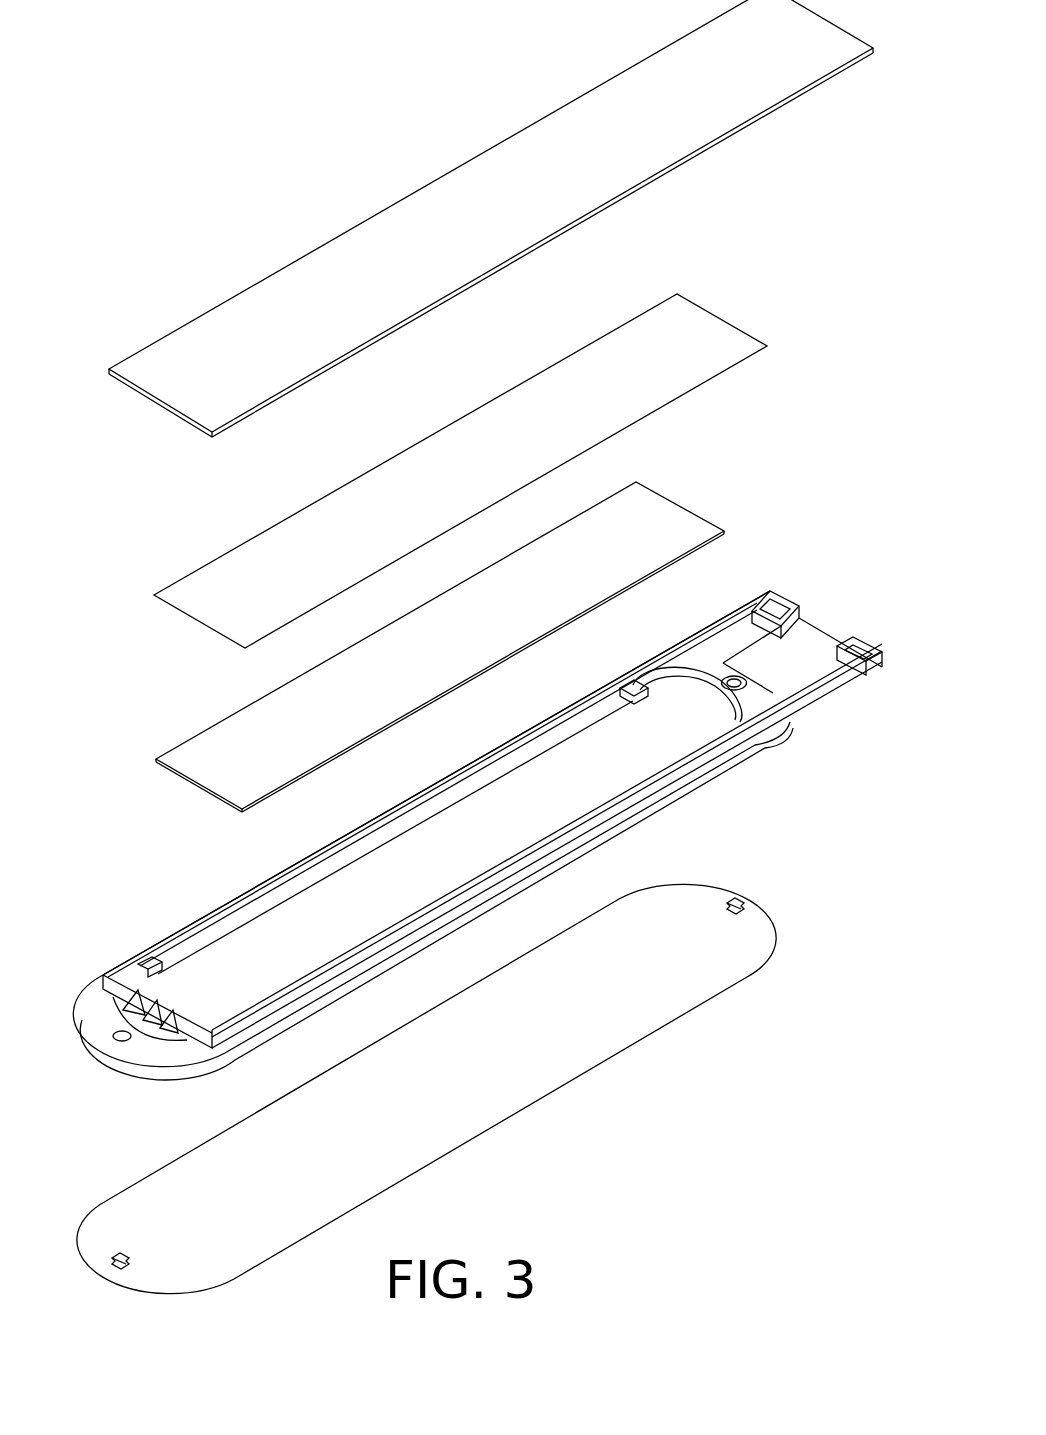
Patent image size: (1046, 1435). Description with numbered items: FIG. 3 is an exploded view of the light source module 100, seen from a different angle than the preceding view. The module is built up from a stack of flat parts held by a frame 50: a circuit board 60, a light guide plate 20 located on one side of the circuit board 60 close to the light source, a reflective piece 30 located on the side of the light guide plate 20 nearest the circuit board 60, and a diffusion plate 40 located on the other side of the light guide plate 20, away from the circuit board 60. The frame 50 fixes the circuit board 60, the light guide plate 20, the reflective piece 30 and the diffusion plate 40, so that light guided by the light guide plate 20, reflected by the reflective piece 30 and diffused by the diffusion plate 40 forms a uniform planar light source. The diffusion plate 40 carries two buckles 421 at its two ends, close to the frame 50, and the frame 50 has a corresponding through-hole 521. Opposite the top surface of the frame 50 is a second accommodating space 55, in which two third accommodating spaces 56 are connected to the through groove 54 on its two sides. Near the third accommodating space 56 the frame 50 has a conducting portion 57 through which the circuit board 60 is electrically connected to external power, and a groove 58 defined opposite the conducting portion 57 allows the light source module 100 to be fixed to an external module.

The light source module 100 is at (320, 72).
The circuit board 60 is at (318, 268).
The reflective piece 30 is at (520, 408).
The light guide plate 20 is at (665, 520).
The frame 50 is at (472, 855).
The groove 58 is at (797, 643).
The through groove 54 is at (325, 910).
The third accommodating space 56 is at (210, 928).
The second accommodating space 55 is at (140, 966).
The conducting portion 57 is at (175, 1017).
The through-hole 521 is at (113, 1038).
The diffusion plate 40 is at (439, 1082).
The buckle 421 is at (735, 902).